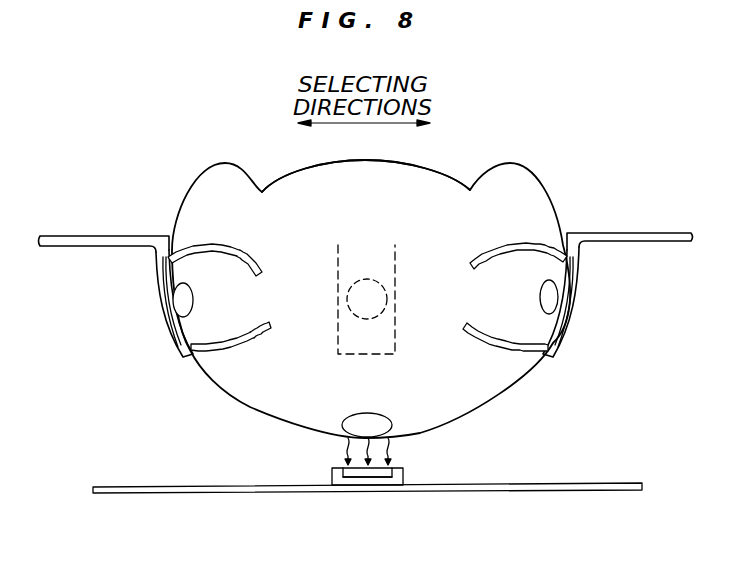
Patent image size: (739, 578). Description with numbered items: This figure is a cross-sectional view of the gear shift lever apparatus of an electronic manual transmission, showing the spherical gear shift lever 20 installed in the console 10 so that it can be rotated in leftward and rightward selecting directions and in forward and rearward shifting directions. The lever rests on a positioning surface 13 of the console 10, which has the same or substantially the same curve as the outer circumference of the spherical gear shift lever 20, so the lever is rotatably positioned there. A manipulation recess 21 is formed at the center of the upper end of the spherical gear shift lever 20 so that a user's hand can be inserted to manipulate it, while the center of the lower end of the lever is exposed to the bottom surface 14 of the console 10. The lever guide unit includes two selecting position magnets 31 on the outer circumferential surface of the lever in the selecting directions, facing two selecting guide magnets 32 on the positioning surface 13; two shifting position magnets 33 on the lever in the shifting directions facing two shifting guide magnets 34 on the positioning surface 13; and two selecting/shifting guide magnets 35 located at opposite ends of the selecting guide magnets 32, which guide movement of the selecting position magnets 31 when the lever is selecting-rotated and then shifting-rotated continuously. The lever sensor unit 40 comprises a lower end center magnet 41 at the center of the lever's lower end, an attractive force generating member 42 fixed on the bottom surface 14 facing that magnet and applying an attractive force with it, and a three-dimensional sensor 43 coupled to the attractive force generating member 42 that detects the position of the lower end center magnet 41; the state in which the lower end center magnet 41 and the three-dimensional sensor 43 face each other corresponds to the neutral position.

The console 10 is at (62, 237).
The positioning surface 13 is at (153, 270).
The bottom surface 14 is at (600, 484).
The spherical gear shift lever 20 is at (298, 190).
The manipulation recess 21 is at (428, 172).
The selecting position magnet 31 is at (183, 299).
The selecting guide magnet 32 is at (168, 328).
The shifting position magnet 33 is at (382, 285).
The shifting guide magnet 34 is at (397, 325).
The selecting/shifting guide magnet 35 is at (202, 247).
The lever sensor unit 40 is at (316, 472).
The lower end center magnet 41 is at (343, 424).
The attractive force generating member 42 is at (397, 478).
The three-dimensional sensor 43 is at (352, 475).